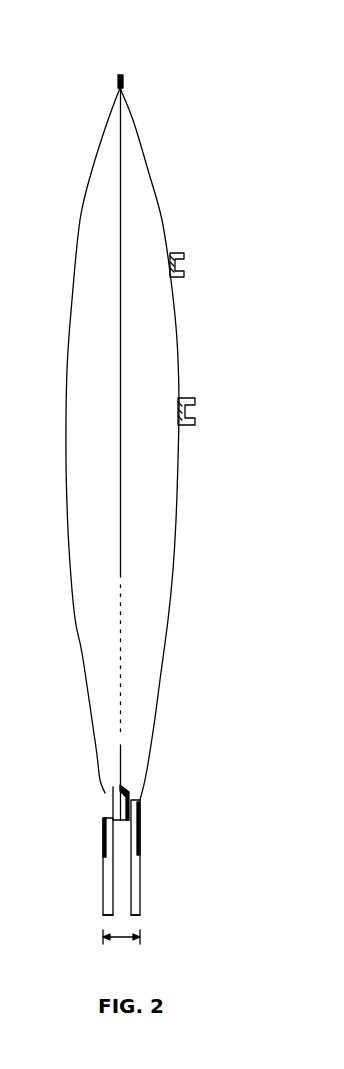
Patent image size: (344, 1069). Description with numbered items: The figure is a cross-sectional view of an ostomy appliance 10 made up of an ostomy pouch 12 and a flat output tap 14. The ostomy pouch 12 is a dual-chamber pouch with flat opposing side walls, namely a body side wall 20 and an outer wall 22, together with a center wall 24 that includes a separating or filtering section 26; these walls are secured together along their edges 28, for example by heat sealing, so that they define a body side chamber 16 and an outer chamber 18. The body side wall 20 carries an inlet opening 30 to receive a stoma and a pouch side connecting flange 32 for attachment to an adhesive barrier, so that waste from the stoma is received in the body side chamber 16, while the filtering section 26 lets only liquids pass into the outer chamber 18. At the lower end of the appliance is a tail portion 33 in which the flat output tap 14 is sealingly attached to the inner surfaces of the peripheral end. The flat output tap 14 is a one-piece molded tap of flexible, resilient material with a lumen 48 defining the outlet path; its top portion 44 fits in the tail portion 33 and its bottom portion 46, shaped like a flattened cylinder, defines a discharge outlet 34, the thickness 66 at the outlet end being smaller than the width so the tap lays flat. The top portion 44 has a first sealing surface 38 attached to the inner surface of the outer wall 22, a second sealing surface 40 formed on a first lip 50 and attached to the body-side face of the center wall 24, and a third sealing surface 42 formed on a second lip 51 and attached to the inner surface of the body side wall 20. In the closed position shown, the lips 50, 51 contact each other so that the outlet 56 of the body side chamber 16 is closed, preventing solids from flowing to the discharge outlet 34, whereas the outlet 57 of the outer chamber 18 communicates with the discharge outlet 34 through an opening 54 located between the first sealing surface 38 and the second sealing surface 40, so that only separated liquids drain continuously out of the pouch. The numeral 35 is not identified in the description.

The ostomy appliance 10 is at (84, 65).
The edges 28 is at (121, 74).
The ostomy pouch 12 is at (137, 177).
The pouch side connecting flange 32 is at (184, 255).
The inlet opening 30 is at (170, 353).
The center wall 24 is at (120, 392).
The body side chamber 16 is at (160, 465).
The outer chamber 18 is at (83, 518).
The body side wall 20 is at (177, 517).
The outer wall 22 is at (72, 588).
The filtering section 26 is at (120, 712).
The outlet of the outer chamber 57 is at (112, 780).
The second sealing surface 40 is at (110, 788).
The first lip 50 is at (118, 797).
The opening 54 is at (120, 803).
The outlet of the body side chamber 56 is at (134, 784).
The second lip 51 is at (143, 803).
The third sealing surface 42 is at (140, 815).
The tail portion 33 is at (140, 843).
The flat output tap 14 is at (140, 868).
The bottom portion 46 is at (135, 888).
The tab end 35 is at (140, 913).
The first sealing surface 38 is at (103, 820).
The top portion 44 is at (103, 843).
The lumen 48 is at (122, 883).
The discharge outlet 34 is at (122, 910).
The thickness 66 is at (124, 939).